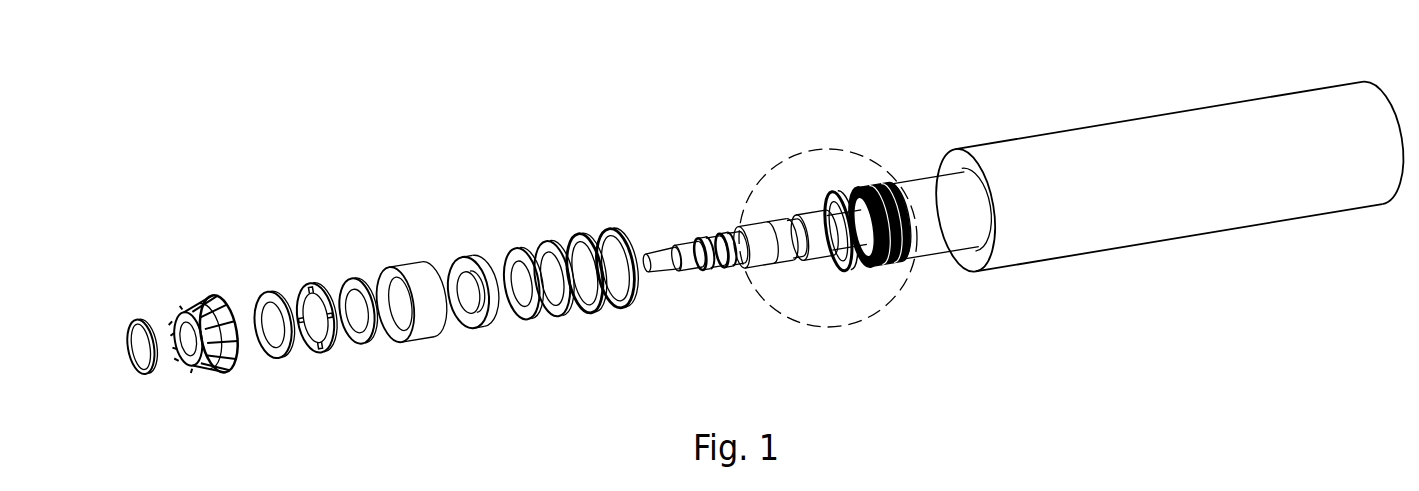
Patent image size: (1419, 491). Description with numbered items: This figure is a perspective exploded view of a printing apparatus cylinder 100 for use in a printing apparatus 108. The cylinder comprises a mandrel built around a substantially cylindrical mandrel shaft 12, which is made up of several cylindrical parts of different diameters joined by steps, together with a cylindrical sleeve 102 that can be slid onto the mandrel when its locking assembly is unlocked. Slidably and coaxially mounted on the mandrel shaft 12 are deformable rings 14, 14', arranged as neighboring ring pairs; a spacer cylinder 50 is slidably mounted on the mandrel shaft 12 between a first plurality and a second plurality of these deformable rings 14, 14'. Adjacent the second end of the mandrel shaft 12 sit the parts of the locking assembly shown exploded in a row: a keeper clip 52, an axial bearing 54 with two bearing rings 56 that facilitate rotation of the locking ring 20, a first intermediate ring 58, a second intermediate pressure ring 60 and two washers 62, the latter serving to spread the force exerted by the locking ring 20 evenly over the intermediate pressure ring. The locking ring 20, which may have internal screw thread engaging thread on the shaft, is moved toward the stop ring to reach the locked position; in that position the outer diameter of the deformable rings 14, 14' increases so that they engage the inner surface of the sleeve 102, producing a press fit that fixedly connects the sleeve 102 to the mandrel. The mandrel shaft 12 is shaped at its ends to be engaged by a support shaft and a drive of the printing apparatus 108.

The printing apparatus cylinder 100 is at (987, 234).
The cylindrical sleeve 102 is at (1134, 198).
The printing apparatus 108 is at (1049, 490).
The mandrel shaft 12 is at (862, 210).
The deformable ring 14 is at (753, 284).
The deformable ring 14' is at (712, 290).
The locking ring 20 is at (207, 382).
The spacer cylinder 50 is at (925, 190).
The keeper clip 52 is at (143, 378).
The axial bearing 54 is at (318, 355).
The bearing ring 56 is at (278, 360).
The first intermediate ring 58 is at (475, 332).
The second intermediate pressure ring 60 is at (420, 340).
The washer 62 is at (528, 318).